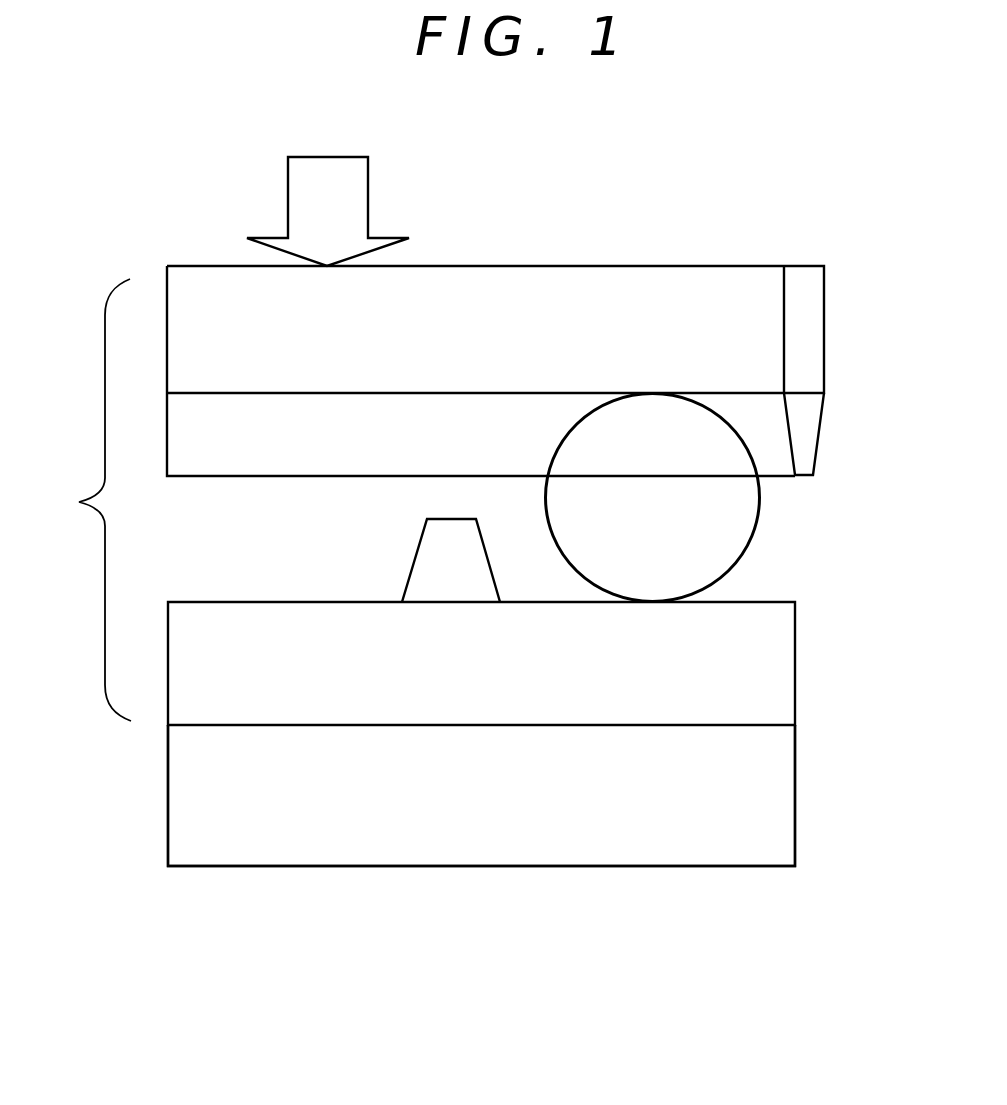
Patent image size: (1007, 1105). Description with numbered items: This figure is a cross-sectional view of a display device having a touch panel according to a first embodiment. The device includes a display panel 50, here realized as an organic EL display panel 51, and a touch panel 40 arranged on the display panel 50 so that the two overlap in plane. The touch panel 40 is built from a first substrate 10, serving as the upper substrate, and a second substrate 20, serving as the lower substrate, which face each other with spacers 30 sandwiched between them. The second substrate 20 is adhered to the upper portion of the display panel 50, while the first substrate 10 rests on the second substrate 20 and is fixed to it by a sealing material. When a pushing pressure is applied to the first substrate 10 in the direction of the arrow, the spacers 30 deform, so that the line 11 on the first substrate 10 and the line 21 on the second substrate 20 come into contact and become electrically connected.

The first substrate 10 is at (708, 266).
The line 11 is at (820, 427).
The second substrate 20 is at (710, 725).
The line 21 is at (415, 557).
The spacer 30 is at (760, 510).
The touch panel 40 is at (79, 500).
The display panel 50 is at (695, 861).
The organic EL display panel 51 is at (481, 795).